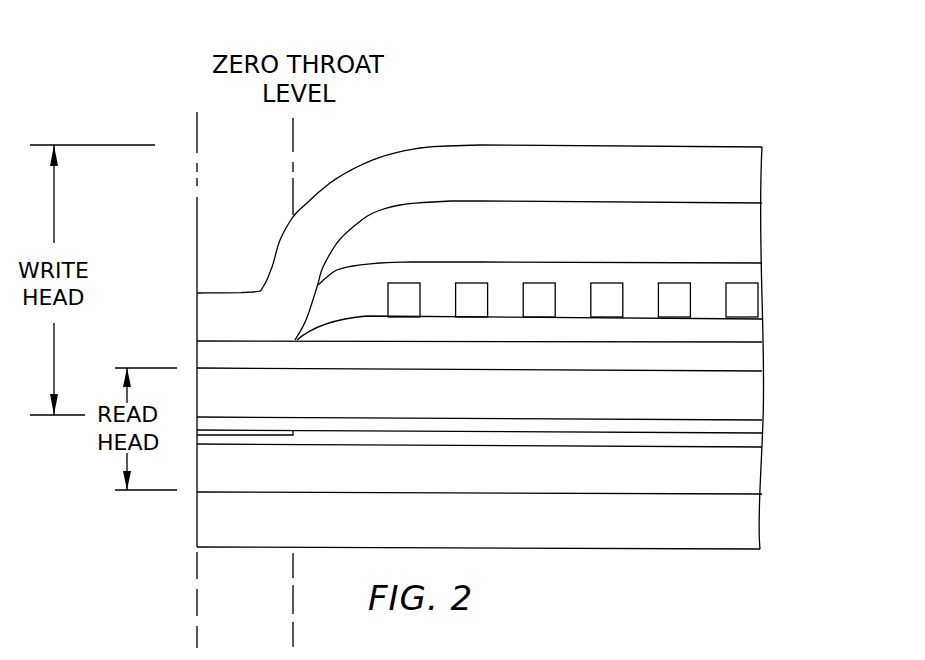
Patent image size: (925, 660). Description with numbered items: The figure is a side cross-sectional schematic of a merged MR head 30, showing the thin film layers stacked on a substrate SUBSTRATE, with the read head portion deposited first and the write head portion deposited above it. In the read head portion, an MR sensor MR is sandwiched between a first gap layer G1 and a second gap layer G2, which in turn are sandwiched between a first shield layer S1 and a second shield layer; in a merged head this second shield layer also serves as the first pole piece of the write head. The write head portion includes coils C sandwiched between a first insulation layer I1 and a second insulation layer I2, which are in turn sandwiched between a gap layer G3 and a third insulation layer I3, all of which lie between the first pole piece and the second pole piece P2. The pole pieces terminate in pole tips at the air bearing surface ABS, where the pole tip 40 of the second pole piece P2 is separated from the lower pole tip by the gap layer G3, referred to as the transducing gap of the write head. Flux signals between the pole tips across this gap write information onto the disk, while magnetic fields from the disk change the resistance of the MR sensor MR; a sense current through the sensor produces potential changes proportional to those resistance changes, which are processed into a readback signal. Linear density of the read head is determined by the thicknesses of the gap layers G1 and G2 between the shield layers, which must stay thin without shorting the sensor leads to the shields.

The merged MR head 30 is at (494, 293).
The pole tip 40 is at (220, 317).
The air bearing surface ABS is at (198, 172).
The MR sensor MR is at (212, 415).
The first gap layer G1 is at (783, 448).
The second gap layer G2 is at (783, 426).
The gap layer G3 is at (479, 355).
The second pole piece P2 is at (479, 219).
The first insulation layer I1 is at (529, 328).
The second insulation layer I2 is at (540, 284).
The third insulation layer I3 is at (528, 270).
The coils C is at (573, 300).
The first shield layer S1 is at (479, 469).
The substrate SUBSTRATE is at (479, 520).